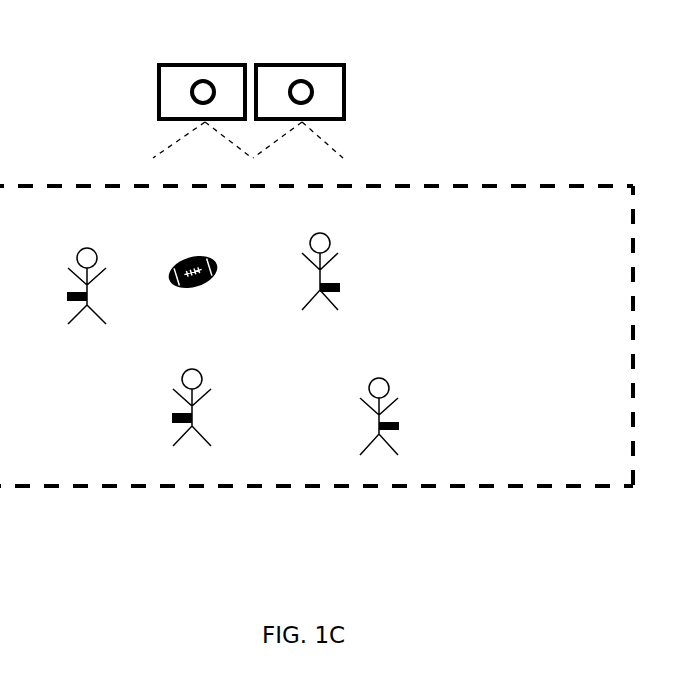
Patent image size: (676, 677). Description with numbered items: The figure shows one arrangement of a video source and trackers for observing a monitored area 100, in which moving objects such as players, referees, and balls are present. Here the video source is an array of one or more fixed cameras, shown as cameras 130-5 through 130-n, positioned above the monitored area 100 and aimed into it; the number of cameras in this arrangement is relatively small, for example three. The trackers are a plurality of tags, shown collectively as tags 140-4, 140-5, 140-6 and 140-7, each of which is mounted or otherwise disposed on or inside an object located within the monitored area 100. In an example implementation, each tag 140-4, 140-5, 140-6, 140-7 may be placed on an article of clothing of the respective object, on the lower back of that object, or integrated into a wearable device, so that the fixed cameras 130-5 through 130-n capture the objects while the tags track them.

The monitored area 100 is at (480, 186).
The fixed camera 130-5 is at (157, 93).
The fixed camera 130-n is at (342, 102).
The tag 140-4 is at (67, 296).
The tag 140-5 is at (172, 418).
The tag 140-6 is at (342, 286).
The tag 140-7 is at (399, 425).